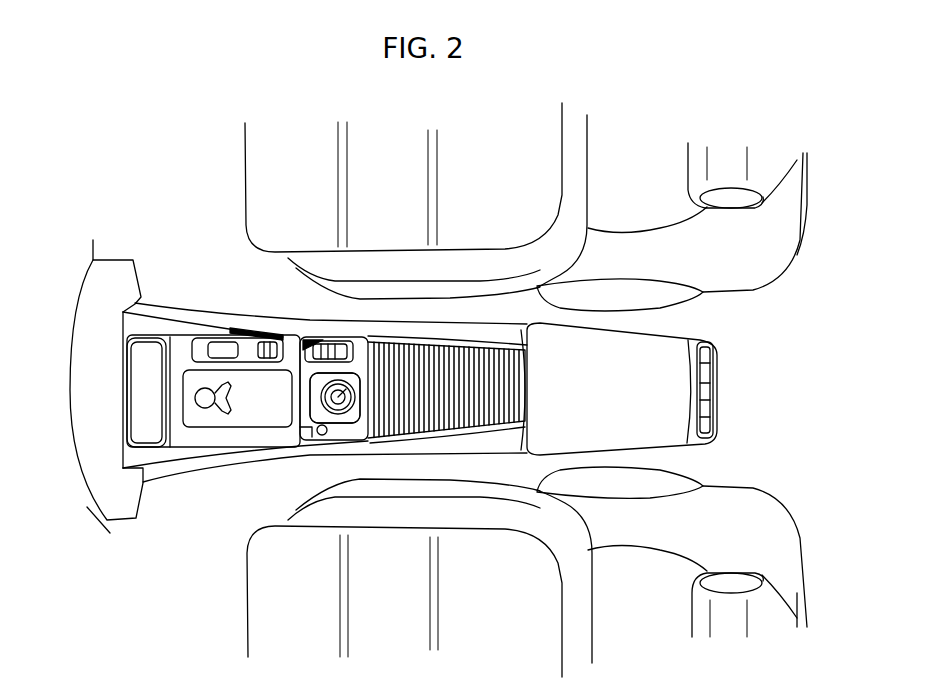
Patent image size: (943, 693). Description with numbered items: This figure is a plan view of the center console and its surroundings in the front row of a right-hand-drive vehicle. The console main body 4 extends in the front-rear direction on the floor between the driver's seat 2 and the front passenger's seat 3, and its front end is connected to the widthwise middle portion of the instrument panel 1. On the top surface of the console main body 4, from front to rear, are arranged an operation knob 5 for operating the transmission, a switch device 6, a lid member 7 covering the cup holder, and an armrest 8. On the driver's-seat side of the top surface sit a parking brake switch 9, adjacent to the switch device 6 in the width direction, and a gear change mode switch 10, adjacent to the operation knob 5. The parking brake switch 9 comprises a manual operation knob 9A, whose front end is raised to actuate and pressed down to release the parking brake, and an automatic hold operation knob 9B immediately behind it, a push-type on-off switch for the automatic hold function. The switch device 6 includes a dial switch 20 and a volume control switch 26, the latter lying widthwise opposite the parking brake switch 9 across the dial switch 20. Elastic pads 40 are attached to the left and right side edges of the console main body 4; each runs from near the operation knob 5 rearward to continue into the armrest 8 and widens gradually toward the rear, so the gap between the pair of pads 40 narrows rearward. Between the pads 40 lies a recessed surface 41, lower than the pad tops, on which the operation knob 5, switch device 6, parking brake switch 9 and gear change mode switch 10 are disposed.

The instrument panel 1 is at (110, 500).
The driver's seat 2 is at (263, 158).
The front passenger's seat 3 is at (257, 627).
The console main body 4 is at (193, 490).
The operation knob 5 is at (193, 387).
The switch device 6 is at (305, 430).
The lid member 7 is at (401, 435).
The armrest 8 is at (670, 392).
The parking brake switch 9 is at (300, 338).
The manual operation knob 9A is at (335, 398).
The automatic hold operation knob 9B is at (345, 350).
The gear change mode switch 10 is at (268, 334).
The dial switch 20 is at (369, 340).
The volume control switch 26 is at (322, 436).
The pad 40 is at (482, 337).
The recessed surface 41 is at (235, 437).